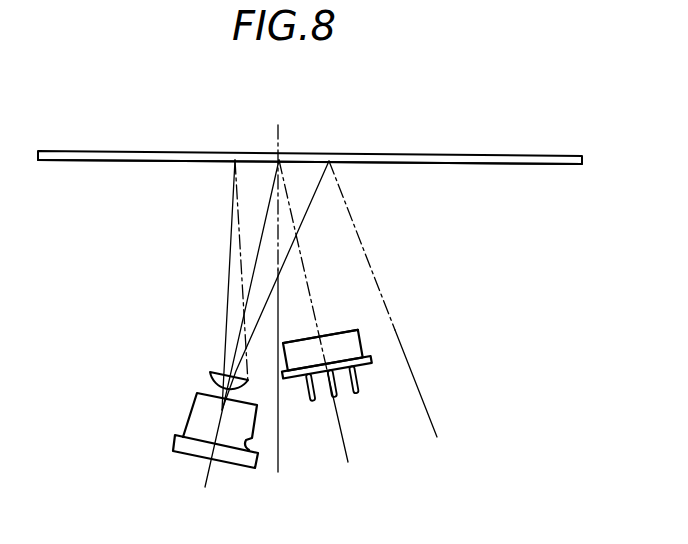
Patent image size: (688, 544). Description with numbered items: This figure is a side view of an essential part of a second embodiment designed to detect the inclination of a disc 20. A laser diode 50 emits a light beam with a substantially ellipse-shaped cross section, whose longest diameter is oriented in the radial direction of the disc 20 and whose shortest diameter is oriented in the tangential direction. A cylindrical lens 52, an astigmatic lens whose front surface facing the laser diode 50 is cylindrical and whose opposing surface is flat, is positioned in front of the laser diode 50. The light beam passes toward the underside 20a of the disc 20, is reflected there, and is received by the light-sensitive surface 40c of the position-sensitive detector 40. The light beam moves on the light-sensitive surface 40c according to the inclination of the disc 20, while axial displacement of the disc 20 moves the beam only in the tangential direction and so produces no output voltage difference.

The disc 20 is at (412, 155).
The lower surface of plate 20a is at (493, 163).
The position-sensitive detector 40 is at (362, 348).
The light-sensitive surface 40c is at (342, 332).
The laser diode 50 is at (189, 416).
The cylindrical lens 52 is at (210, 373).